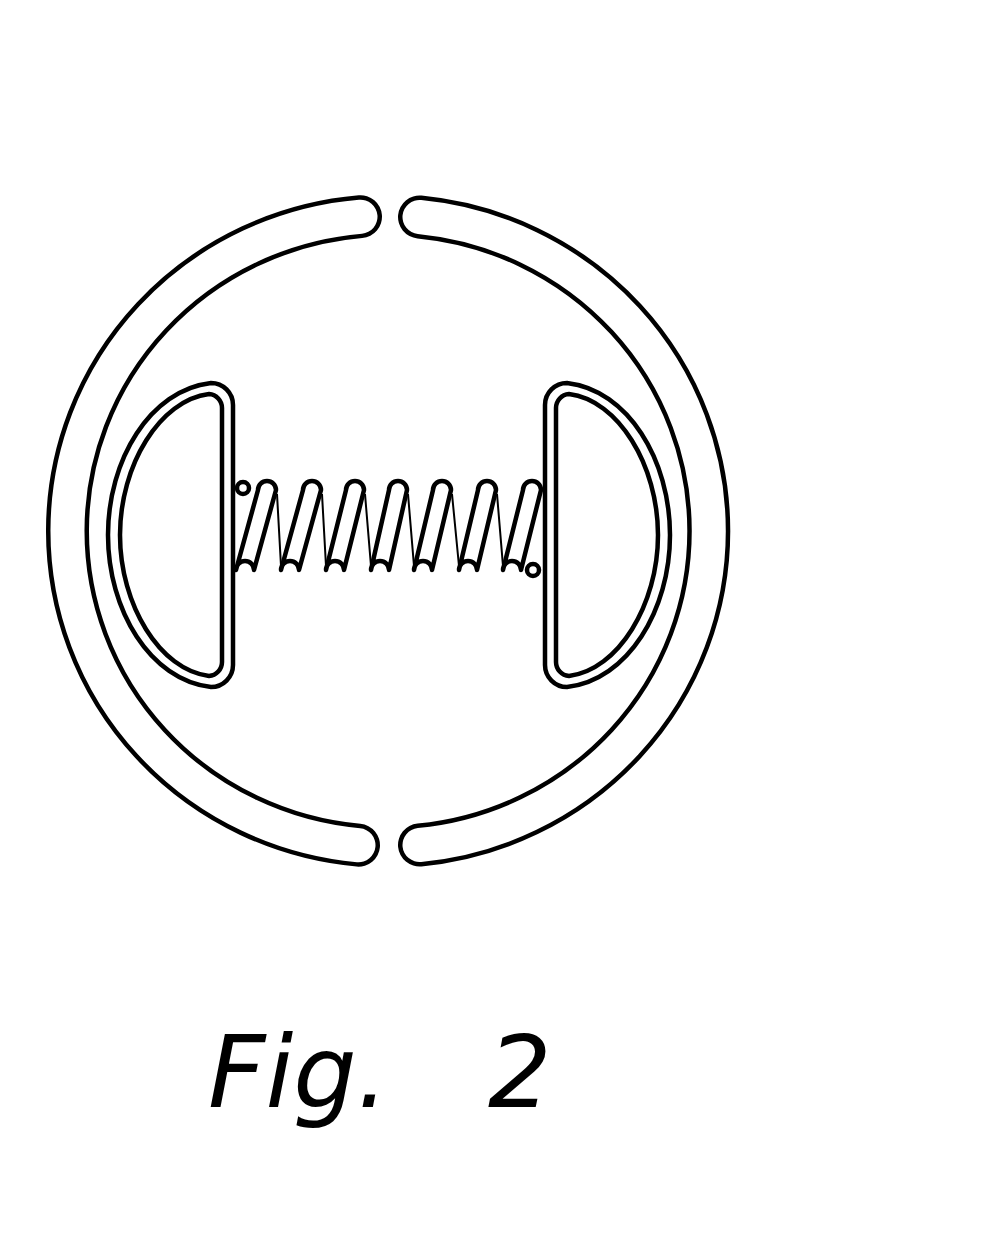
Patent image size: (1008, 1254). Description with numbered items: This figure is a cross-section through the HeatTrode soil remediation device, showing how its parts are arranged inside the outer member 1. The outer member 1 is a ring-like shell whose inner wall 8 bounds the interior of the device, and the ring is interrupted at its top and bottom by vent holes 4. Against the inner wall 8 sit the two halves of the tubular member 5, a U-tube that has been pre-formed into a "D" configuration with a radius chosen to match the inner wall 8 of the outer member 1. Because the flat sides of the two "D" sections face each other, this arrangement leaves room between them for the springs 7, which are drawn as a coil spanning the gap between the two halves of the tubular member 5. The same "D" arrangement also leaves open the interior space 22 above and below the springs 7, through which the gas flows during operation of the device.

The outer member 1 is at (724, 597).
The vent holes 4 is at (392, 203).
The tubular member 5 is at (185, 541).
The springs 7 is at (425, 582).
The inner wall 8 is at (197, 763).
The interior space 22 is at (408, 370).